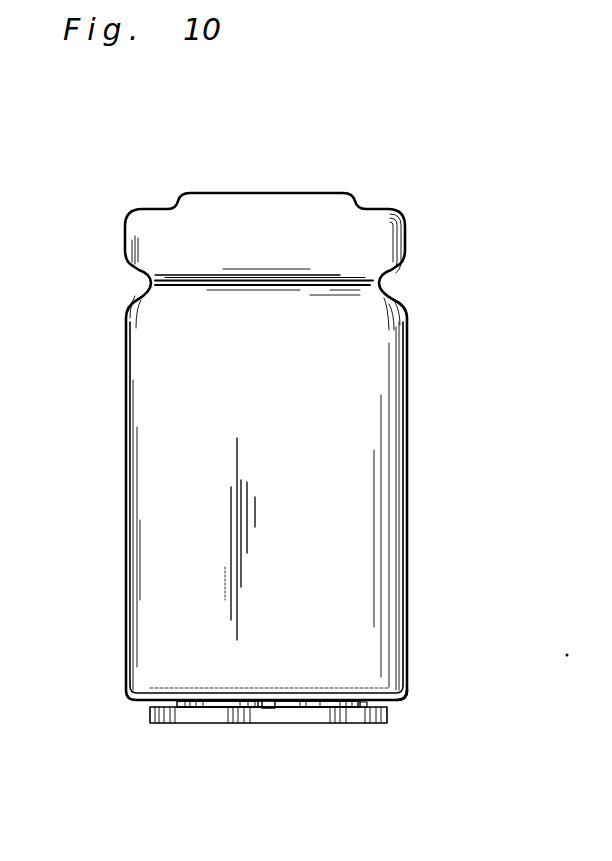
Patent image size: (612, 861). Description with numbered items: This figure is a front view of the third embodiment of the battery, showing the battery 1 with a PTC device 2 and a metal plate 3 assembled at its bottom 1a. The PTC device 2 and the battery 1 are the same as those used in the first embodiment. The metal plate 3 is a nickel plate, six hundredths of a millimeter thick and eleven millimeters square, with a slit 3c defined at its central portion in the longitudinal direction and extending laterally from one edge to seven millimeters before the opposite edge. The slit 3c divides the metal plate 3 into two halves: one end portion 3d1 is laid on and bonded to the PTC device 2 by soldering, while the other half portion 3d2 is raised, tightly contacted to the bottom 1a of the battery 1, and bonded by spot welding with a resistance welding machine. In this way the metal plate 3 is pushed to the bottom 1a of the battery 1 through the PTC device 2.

The battery 1 is at (368, 428).
The bottom of the battery 1a is at (406, 702).
The PTC device 2 is at (292, 716).
The metal plate 3 is at (228, 703).
The slit 3c is at (270, 702).
The one end portion 3d1 is at (318, 703).
The another half portion 3d2 is at (200, 703).